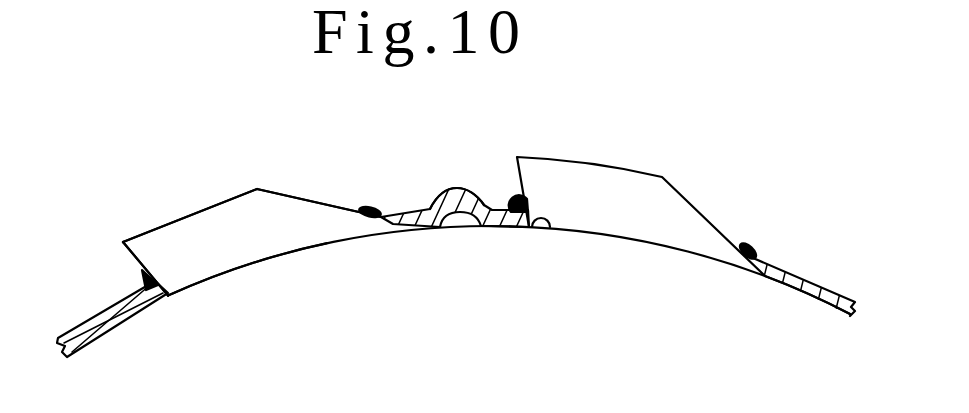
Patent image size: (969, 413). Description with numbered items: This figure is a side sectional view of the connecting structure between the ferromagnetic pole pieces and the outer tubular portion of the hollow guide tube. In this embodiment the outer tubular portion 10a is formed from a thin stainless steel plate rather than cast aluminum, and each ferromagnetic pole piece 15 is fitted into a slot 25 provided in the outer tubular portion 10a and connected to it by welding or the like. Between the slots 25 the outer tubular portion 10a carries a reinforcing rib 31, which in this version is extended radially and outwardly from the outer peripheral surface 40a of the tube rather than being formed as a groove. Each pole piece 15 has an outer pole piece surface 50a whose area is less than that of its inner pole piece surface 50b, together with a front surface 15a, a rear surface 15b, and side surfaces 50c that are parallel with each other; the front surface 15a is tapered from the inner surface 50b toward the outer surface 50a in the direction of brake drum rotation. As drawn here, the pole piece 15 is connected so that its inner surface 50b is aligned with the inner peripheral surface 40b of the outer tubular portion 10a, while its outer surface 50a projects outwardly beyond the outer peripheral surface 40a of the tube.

The outer tubular portion 10a is at (76, 331).
The ferromagnetic pole piece 15 is at (182, 217).
The front surface 15a is at (130, 257).
The rear surface 15b is at (313, 202).
The slot 25 is at (549, 228).
The reinforcing rib 31 is at (457, 189).
The outer peripheral surface 40a is at (788, 268).
The inner peripheral surface 40b is at (790, 289).
The outer pole piece surface 50a is at (230, 198).
The inner pole piece surface 50b is at (327, 244).
The side surfaces 50c is at (243, 258).